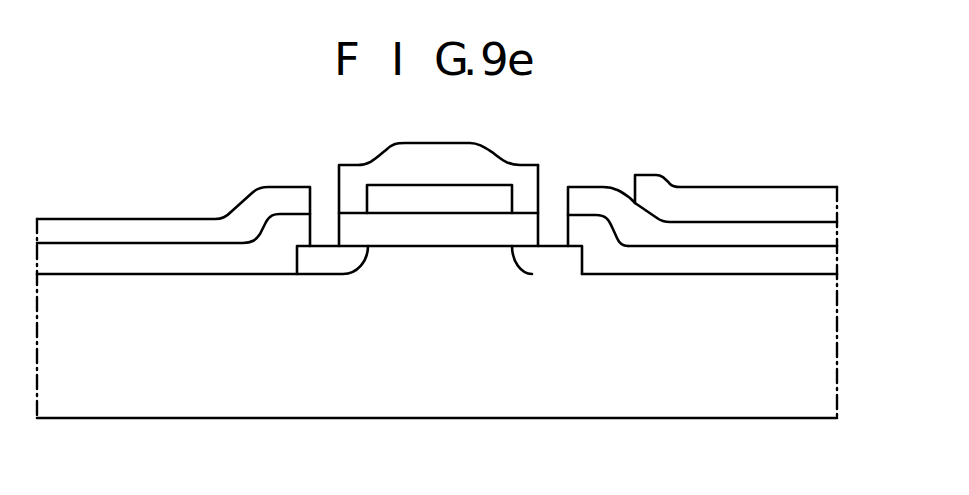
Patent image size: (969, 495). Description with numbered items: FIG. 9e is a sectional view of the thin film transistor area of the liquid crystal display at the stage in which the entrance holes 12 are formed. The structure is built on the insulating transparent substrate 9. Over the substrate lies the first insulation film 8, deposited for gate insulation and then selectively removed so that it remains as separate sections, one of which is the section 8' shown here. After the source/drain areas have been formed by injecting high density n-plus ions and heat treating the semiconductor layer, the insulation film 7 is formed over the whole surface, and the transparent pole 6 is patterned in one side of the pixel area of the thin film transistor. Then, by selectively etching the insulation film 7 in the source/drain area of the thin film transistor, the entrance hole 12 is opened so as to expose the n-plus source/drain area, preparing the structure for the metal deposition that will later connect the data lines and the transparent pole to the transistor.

The transparent pole 6 is at (828, 203).
The insulation film 7 is at (828, 233).
The first insulation film 8 is at (603, 259).
The section of first insulation film 8' is at (440, 357).
The insulating transparent substrate 9 is at (828, 299).
The entrance hole 12 is at (553, 195).